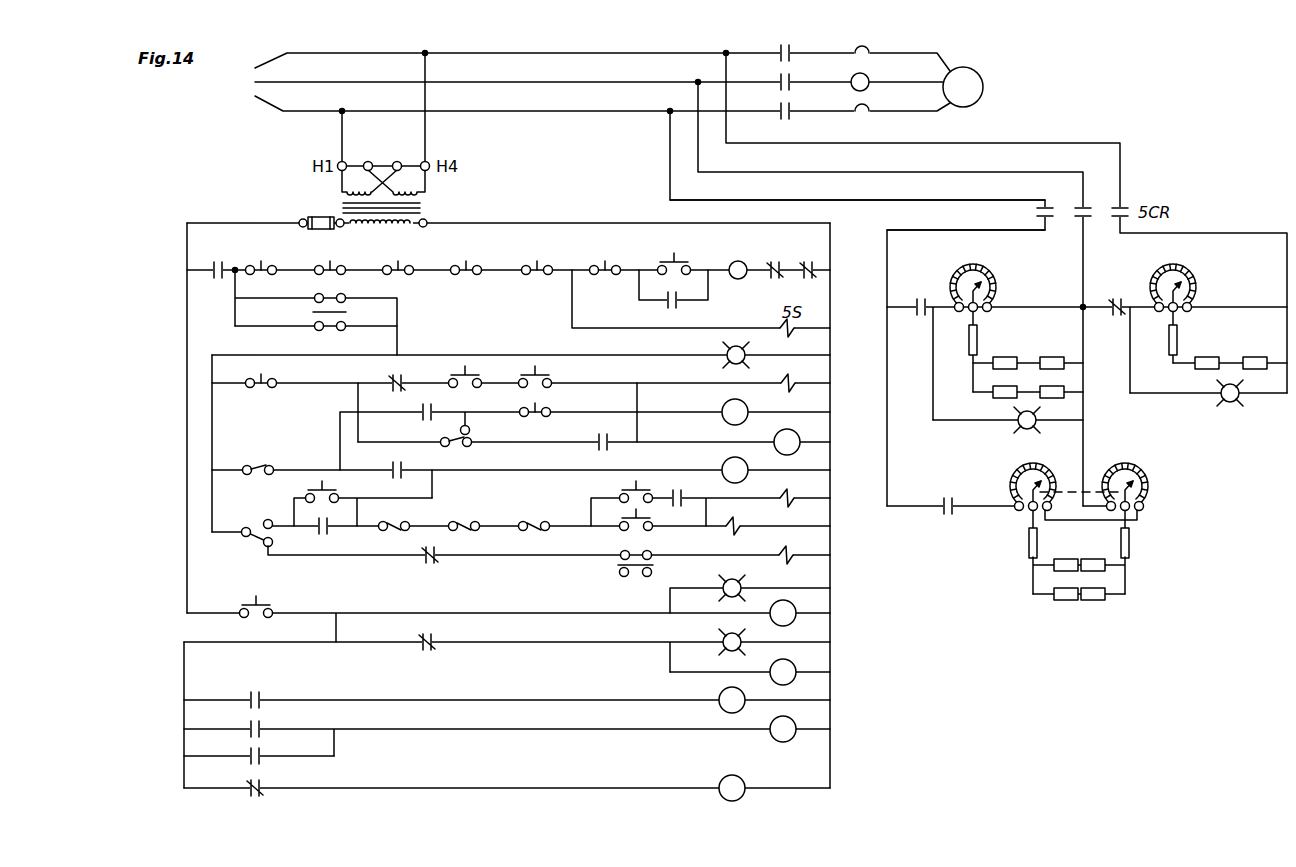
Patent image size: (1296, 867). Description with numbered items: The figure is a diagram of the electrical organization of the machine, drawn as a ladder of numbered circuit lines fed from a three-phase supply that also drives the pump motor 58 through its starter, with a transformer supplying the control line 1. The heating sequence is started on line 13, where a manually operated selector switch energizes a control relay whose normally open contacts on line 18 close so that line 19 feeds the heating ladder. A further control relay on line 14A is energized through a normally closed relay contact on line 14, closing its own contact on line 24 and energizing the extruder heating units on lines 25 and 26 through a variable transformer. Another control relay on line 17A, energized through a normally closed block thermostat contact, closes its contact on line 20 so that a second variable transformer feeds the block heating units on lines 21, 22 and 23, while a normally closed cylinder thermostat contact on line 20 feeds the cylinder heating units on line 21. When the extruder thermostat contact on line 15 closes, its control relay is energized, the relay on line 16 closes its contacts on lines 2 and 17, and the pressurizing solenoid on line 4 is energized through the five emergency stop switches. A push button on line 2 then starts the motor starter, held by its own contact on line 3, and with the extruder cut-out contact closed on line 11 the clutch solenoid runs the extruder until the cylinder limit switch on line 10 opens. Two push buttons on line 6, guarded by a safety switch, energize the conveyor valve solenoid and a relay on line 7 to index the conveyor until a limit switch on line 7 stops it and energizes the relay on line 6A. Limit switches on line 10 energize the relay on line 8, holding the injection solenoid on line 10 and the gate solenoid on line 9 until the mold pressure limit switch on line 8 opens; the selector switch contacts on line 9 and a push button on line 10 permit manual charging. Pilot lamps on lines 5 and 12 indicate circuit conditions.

The motor 58 is at (984, 92).
The control circuit line 1 is at (500, 223).
The line 2 is at (500, 272).
The line 3 is at (283, 312).
The line 4 is at (283, 331).
The control circuit line 5 is at (500, 355).
The line 6 is at (500, 399).
The line 6A is at (494, 427).
The line 7 is at (500, 439).
The line 8 is at (500, 467).
The line 9 is at (500, 497).
The line 10 is at (495, 526).
The line 11 is at (495, 563).
The control circuit line 12 is at (495, 593).
The line 13 is at (495, 606).
The line 14 is at (495, 643).
The line 14A is at (489, 665).
The line 15 is at (495, 692).
The line 16 is at (495, 729).
The line 17 is at (247, 748).
The line 17A is at (489, 780).
The line 18 is at (857, 210).
The control circuit line 19 is at (952, 233).
The line 20 is at (1073, 334).
The line 21 is at (1073, 355).
The control circuit line 22 is at (1073, 398).
The control circuit line 23 is at (971, 420).
The line 24 is at (1004, 504).
The control circuit line 25 is at (992, 566).
The control circuit line 26 is at (992, 603).